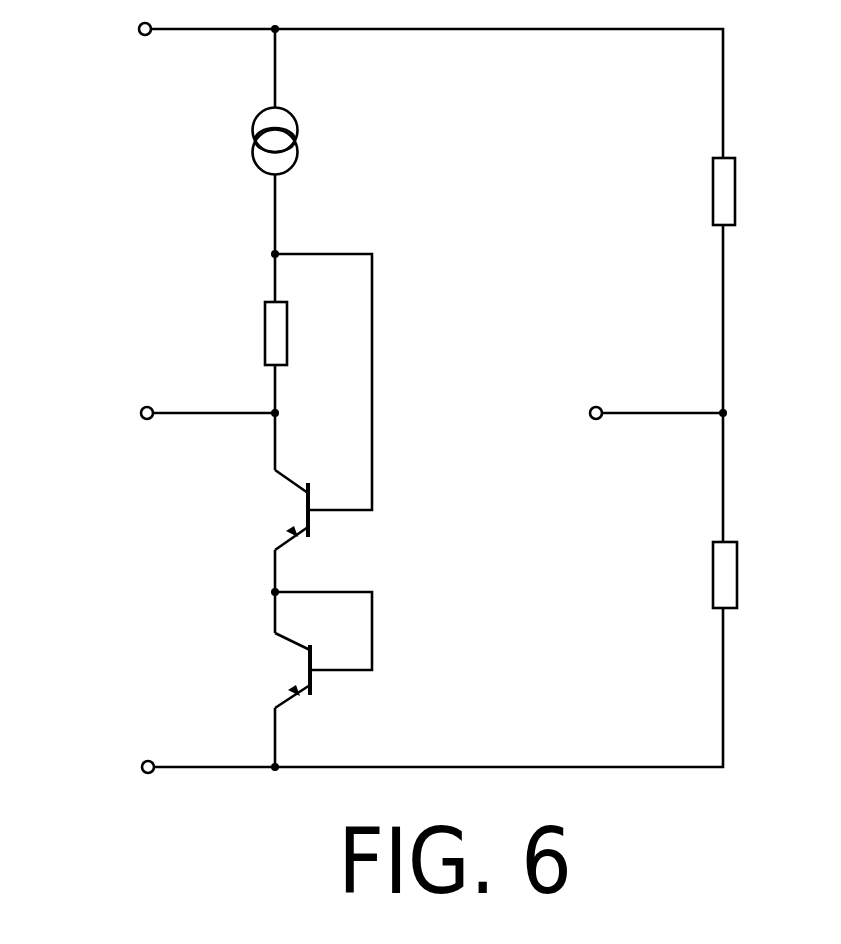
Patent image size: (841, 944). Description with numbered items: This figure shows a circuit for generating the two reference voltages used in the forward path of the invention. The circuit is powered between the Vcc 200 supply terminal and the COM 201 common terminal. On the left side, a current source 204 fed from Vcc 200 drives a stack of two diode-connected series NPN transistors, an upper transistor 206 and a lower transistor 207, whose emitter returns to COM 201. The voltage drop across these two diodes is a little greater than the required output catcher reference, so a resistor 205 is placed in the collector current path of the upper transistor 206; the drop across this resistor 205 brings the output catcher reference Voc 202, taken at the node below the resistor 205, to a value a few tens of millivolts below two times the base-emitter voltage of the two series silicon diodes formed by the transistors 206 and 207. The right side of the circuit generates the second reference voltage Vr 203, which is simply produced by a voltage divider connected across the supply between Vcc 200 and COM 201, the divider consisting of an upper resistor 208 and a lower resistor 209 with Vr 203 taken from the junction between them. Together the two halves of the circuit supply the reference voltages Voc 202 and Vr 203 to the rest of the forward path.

The Vcc 200 is at (130, 29).
The COM 201 is at (137, 767).
The Voc 202 is at (133, 413).
The Vr 203 is at (585, 413).
The current source 204 is at (310, 141).
The resistor 205 is at (326, 327).
The upper transistor 206 is at (315, 523).
The lower transistor 207 is at (318, 678).
The resistor 208 is at (742, 193).
The resistor 209 is at (795, 578).